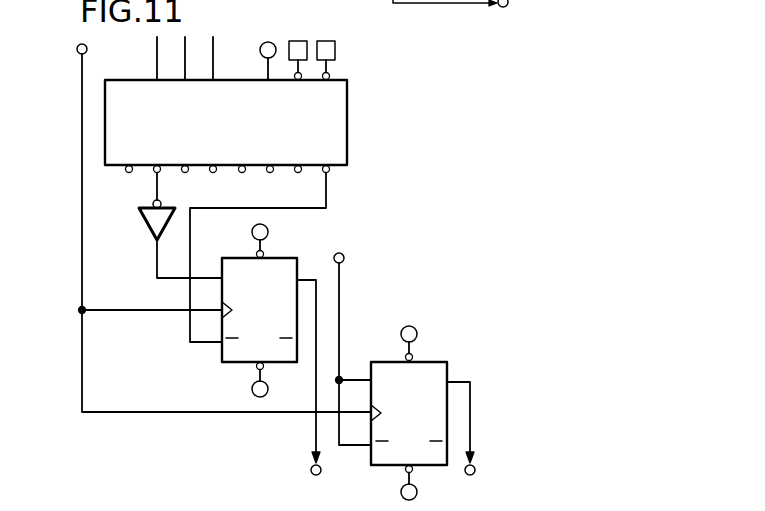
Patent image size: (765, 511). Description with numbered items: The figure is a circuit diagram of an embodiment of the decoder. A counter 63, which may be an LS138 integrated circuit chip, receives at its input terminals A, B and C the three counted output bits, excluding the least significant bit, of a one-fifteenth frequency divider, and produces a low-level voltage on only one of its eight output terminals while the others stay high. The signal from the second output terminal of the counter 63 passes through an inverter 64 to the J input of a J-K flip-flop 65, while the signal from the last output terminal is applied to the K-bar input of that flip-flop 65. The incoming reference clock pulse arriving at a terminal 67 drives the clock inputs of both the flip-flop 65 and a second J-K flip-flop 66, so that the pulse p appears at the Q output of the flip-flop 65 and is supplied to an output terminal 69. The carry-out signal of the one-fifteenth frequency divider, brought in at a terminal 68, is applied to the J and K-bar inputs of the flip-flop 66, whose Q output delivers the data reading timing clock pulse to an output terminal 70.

The counter 63 is at (348, 113).
The inverter 64 is at (141, 217).
The J-K flip-flop 65 is at (222, 352).
The J-K flip-flop 66 is at (437, 362).
The terminal 67 is at (77, 49).
The input terminal 68 is at (343, 254).
The output terminal 69 is at (310, 467).
The output terminal 70 is at (475, 466).